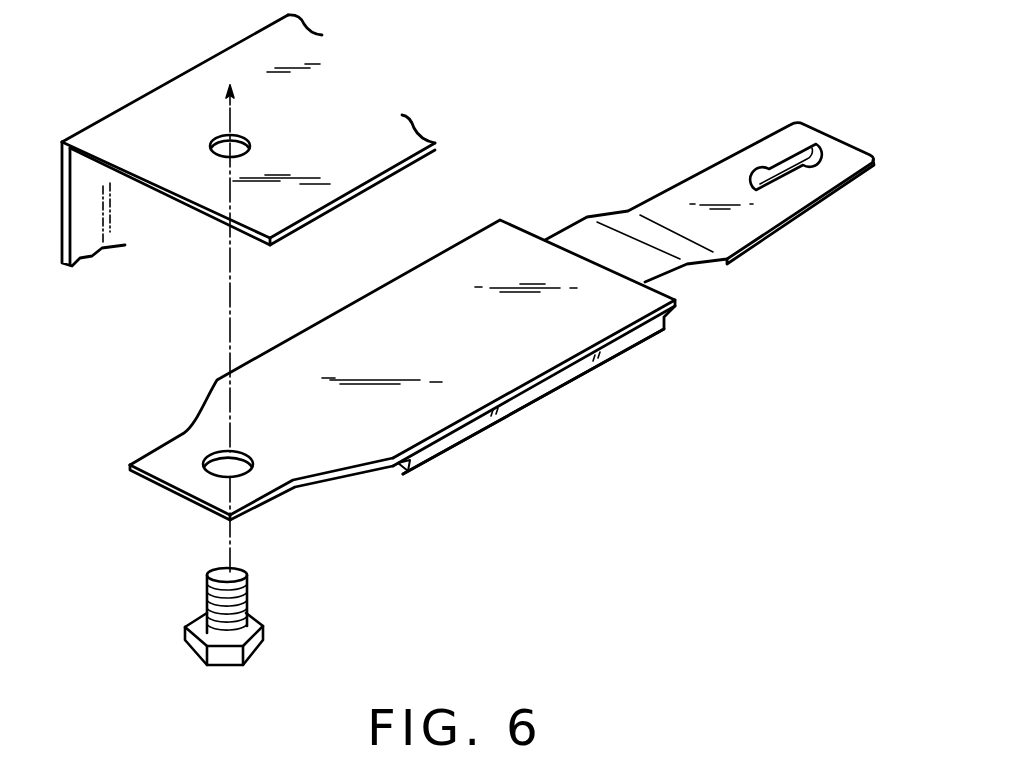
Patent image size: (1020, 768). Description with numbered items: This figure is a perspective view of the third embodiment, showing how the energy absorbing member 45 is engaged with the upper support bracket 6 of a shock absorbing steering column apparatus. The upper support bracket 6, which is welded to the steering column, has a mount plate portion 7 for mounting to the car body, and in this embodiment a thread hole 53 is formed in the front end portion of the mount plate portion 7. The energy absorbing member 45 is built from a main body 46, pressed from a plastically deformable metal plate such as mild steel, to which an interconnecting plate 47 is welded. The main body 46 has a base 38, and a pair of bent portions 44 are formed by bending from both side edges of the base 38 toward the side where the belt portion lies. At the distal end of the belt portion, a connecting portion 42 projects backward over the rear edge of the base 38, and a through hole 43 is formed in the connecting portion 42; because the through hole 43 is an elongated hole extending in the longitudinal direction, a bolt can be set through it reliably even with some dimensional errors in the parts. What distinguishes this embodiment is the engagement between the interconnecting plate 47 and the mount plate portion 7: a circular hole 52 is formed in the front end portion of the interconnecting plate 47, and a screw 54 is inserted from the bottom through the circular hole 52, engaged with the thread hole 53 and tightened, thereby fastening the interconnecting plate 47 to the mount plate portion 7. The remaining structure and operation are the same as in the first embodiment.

The upper support bracket 6 is at (248, 136).
The mount plate portion 7 is at (222, 60).
The thread hole 53 is at (245, 137).
The energy absorbing member 45 is at (492, 310).
The interconnecting plate 47 is at (528, 355).
The bent portion 44 is at (568, 425).
The main body 46 is at (642, 352).
The base 38 is at (400, 467).
The circular hole 52 is at (217, 473).
The connecting portion 42 is at (709, 181).
The through hole 43 is at (778, 173).
The screw 54 is at (263, 632).